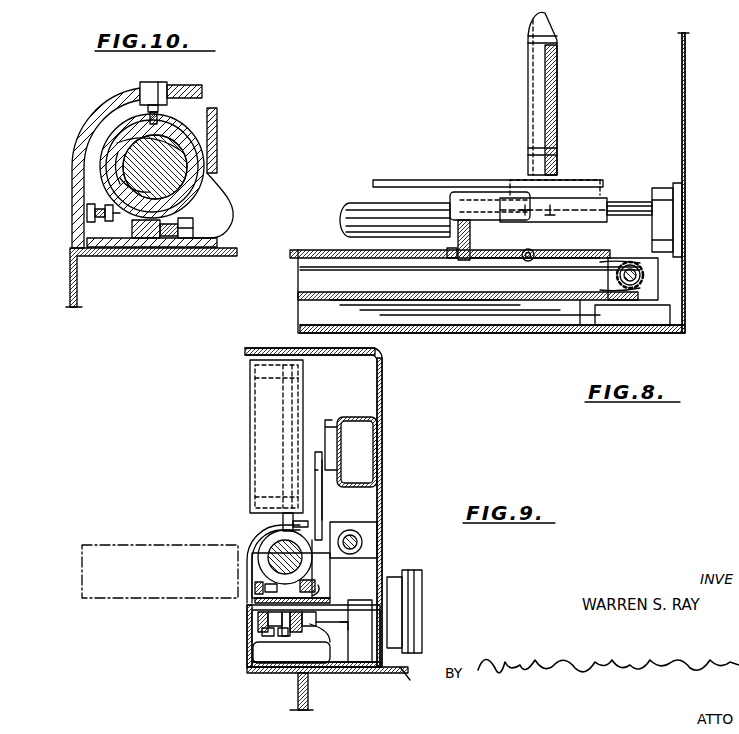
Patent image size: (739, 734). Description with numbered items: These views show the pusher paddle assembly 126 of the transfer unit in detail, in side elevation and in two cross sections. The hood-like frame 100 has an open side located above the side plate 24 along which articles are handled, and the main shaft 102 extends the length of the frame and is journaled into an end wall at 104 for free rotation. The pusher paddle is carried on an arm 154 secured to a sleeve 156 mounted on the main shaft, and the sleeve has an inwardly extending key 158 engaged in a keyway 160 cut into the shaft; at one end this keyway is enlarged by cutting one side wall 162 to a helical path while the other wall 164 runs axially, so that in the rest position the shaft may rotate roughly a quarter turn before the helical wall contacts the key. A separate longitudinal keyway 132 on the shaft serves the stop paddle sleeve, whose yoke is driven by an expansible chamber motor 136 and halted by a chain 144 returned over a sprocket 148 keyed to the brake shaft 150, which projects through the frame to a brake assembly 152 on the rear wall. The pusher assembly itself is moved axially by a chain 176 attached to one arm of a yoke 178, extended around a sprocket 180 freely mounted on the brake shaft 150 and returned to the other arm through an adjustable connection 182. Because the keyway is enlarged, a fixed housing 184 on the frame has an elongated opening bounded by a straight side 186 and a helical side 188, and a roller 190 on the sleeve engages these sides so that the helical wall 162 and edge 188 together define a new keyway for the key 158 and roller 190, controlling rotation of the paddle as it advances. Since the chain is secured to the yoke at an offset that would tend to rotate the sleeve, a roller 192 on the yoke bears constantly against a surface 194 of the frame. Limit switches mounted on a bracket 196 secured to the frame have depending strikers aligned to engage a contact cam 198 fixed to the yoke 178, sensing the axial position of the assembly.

In FIG. 9, the side plate 24 is at (247, 651).
In FIG. 8, the frame 100 is at (686, 117).
In FIG. 9, the frame 100 is at (382, 412).
In FIG. 10, the main shaft 102 is at (158, 163).
In FIG. 8, the main shaft 102 is at (405, 215).
In FIG. 8, the journal 104 is at (676, 221).
In FIG. 8, the pusher paddle assembly 126 is at (528, 104).
In FIG. 9, the pusher paddle assembly 126 is at (242, 467).
In FIG. 10, the keyway 132 is at (183, 130).
In FIG. 8, the keyway 132 is at (345, 215).
In FIG. 9, the expansible chamber motor 136 is at (355, 522).
In FIG. 10, the chain 144 is at (95, 218).
In FIG. 9, the chain 144 is at (256, 633).
In FIG. 9, the sprocket 148 is at (258, 619).
In FIG. 8, the brake shaft 150 is at (640, 277).
In FIG. 9, the brake shaft 150 is at (356, 631).
In FIG. 9, the brake assembly 152 is at (422, 613).
In FIG. 8, the arm 154 is at (557, 117).
In FIG. 9, the arm 154 is at (283, 455).
In FIG. 10, the sleeve 156 is at (208, 175).
In FIG. 8, the sleeve 156 is at (516, 228).
In FIG. 9, the sleeve 156 is at (270, 548).
In FIG. 10, the key 158 is at (131, 186).
In FIG. 10, the keyway 160 is at (118, 172).
In FIG. 10, the side wall 162 is at (137, 143).
In FIG. 10, the wall 164 is at (141, 229).
In FIG. 8, the chain 176 is at (330, 250).
In FIG. 9, the chain 176 is at (320, 586).
In FIG. 10, the yoke 178 is at (226, 205).
In FIG. 8, the yoke 178 is at (600, 228).
In FIG. 9, the yoke 178 is at (314, 565).
In FIG. 8, the sprocket 180 is at (625, 312).
In FIG. 9, the sprocket 180 is at (308, 643).
In FIG. 8, the adjustable connection 182 is at (462, 263).
In FIG. 10, the housing 184 is at (76, 131).
In FIG. 9, the housing 184 is at (247, 552).
In FIG. 10, the side 186 is at (169, 86).
In FIG. 10, the side 188 is at (140, 88).
In FIG. 10, the roller 190 is at (151, 82).
In FIG. 10, the roller 192 is at (190, 249).
In FIG. 8, the roller 192 is at (515, 262).
In FIG. 10, the surface 194 is at (195, 233).
In FIG. 9, the bracket 196 is at (355, 417).
In FIG. 10, the contact cam 198 is at (217, 125).
In FIG. 8, the contact cam 198 is at (497, 198).
In FIG. 9, the contact cam 198 is at (318, 540).